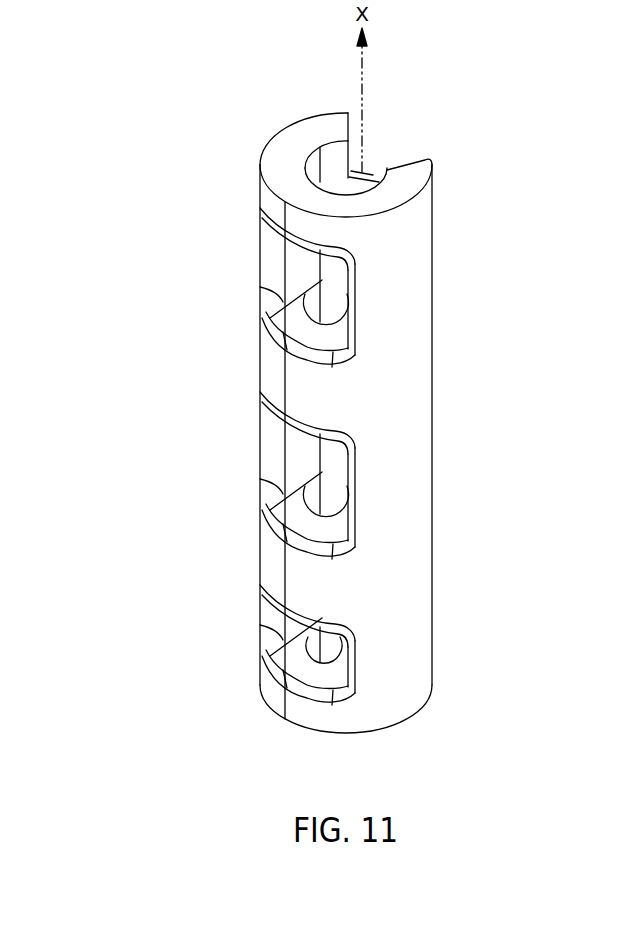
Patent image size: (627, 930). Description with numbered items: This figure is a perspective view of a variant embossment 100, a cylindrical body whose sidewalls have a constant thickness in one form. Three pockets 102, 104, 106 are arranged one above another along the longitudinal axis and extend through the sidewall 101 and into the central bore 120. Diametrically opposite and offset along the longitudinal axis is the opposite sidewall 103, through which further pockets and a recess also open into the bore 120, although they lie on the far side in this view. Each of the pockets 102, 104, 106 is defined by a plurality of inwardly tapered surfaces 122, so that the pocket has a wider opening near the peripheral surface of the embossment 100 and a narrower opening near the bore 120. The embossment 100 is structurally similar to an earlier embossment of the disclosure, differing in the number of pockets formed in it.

The embossment 100 is at (493, 101).
The sidewall 101 is at (272, 698).
The pocket 102 is at (236, 287).
The opposite sidewall 103 is at (418, 719).
The pocket 104 is at (289, 471).
The pocket 106 is at (284, 625).
The bore 120 is at (331, 299).
The inwardly tapered surfaces 122 is at (310, 468).